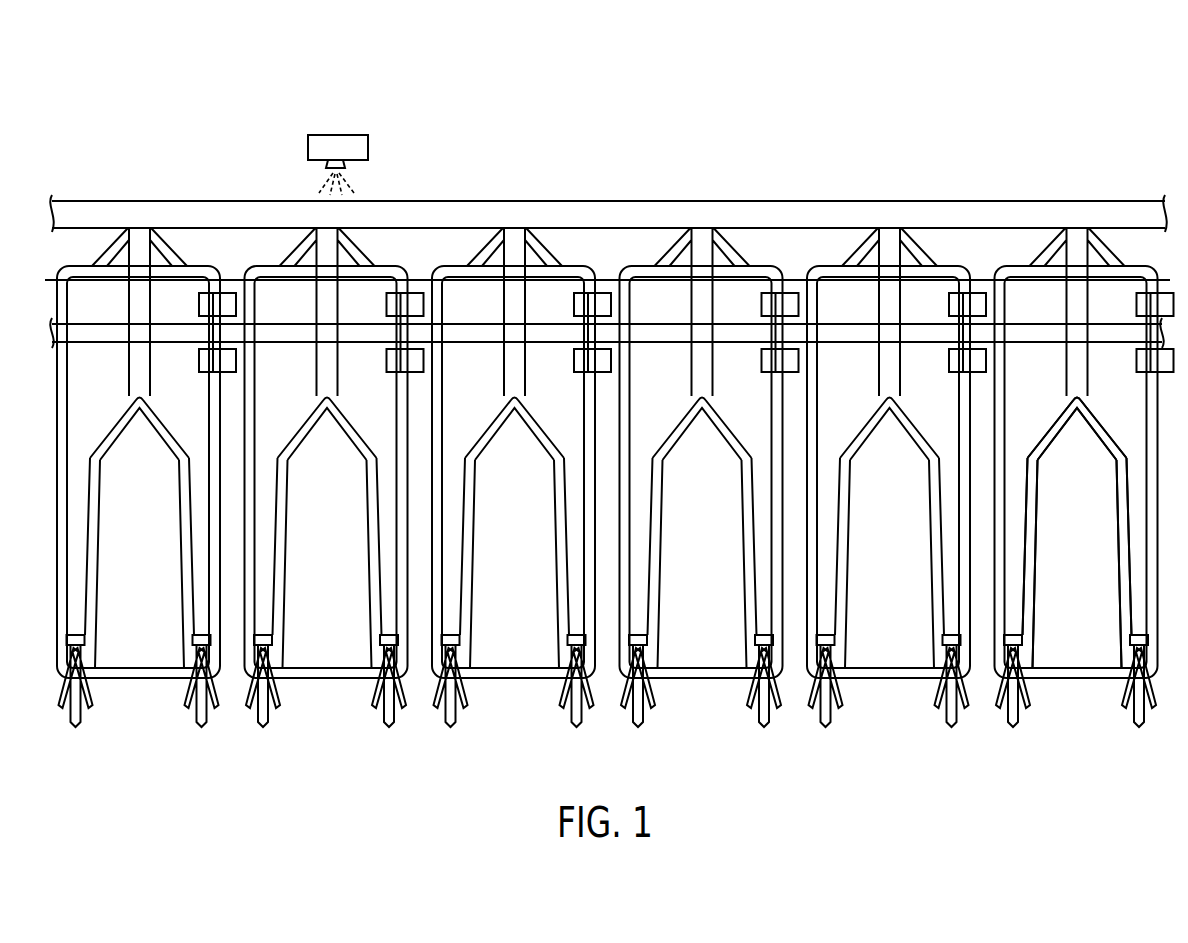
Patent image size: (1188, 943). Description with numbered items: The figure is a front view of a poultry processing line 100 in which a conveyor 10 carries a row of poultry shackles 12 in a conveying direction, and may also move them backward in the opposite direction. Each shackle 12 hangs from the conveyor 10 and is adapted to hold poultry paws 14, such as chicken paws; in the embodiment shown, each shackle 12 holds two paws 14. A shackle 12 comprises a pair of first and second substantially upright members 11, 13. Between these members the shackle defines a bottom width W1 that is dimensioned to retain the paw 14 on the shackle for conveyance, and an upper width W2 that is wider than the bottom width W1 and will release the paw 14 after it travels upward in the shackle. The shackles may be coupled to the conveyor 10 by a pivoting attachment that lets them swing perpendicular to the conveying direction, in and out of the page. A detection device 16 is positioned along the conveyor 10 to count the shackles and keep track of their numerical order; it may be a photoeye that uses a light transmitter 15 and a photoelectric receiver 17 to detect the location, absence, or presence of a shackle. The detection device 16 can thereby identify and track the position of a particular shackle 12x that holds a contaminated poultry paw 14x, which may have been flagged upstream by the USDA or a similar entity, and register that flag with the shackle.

The poultry processing line 100 is at (984, 102).
The conveyor 10 is at (823, 215).
The first substantially upright member 11 is at (1002, 405).
The poultry shackle 12 is at (139, 372).
The poultry shackle holding a contaminated poultry paw 12x is at (515, 372).
The second substantially upright member 13 is at (1123, 535).
The poultry paw 14 is at (206, 647).
The contaminated poultry paw 14x is at (577, 650).
The light transmitter 15 is at (347, 165).
The detection device 16 is at (362, 131).
The photoelectric receiver 17 is at (357, 148).
The bottom width W1 is at (1022, 627).
The upper width W2 is at (1028, 463).